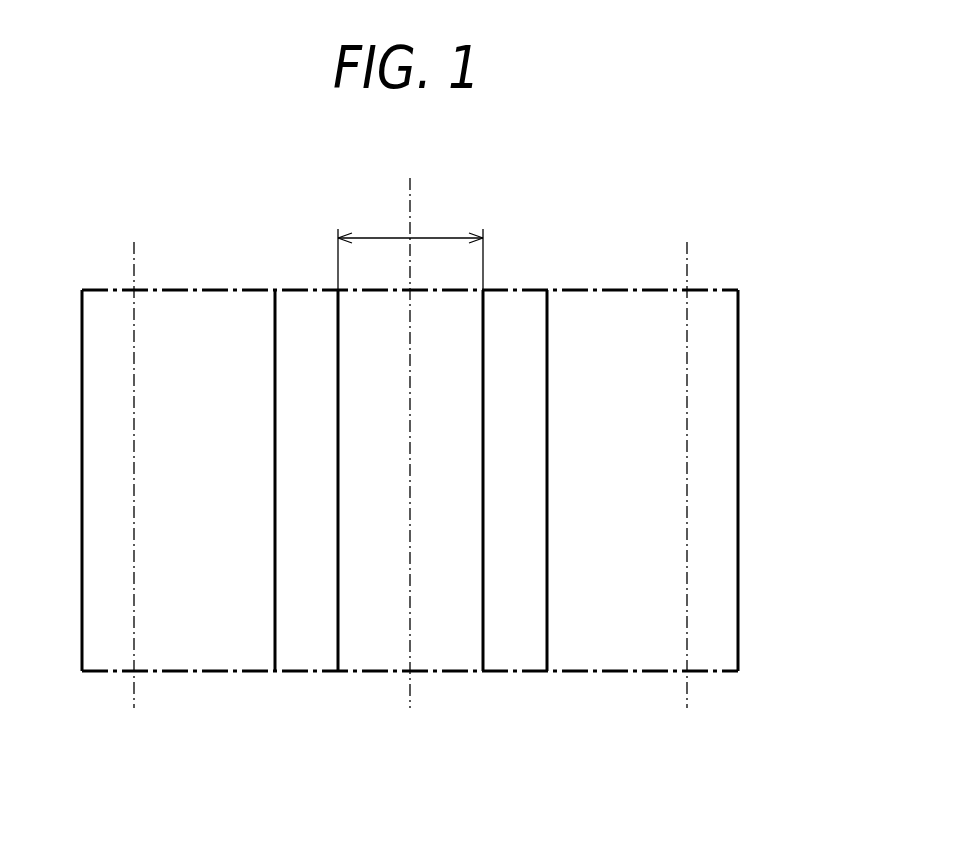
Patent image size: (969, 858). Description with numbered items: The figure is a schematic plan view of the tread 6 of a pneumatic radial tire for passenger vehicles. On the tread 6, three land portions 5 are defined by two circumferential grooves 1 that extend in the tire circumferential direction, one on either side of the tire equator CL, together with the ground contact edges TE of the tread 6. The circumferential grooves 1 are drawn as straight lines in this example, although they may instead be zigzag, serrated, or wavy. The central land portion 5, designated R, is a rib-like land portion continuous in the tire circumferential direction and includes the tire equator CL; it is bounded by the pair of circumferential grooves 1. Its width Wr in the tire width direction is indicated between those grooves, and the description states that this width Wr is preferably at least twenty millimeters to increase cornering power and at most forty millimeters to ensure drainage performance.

The circumferential groove 1 is at (308, 645).
The land portion 5 is at (192, 645).
The tread 6 is at (538, 240).
The tire equator CL is at (415, 426).
The ground contact edge TE is at (137, 223).
The width of the land portion R Wr is at (410, 247).